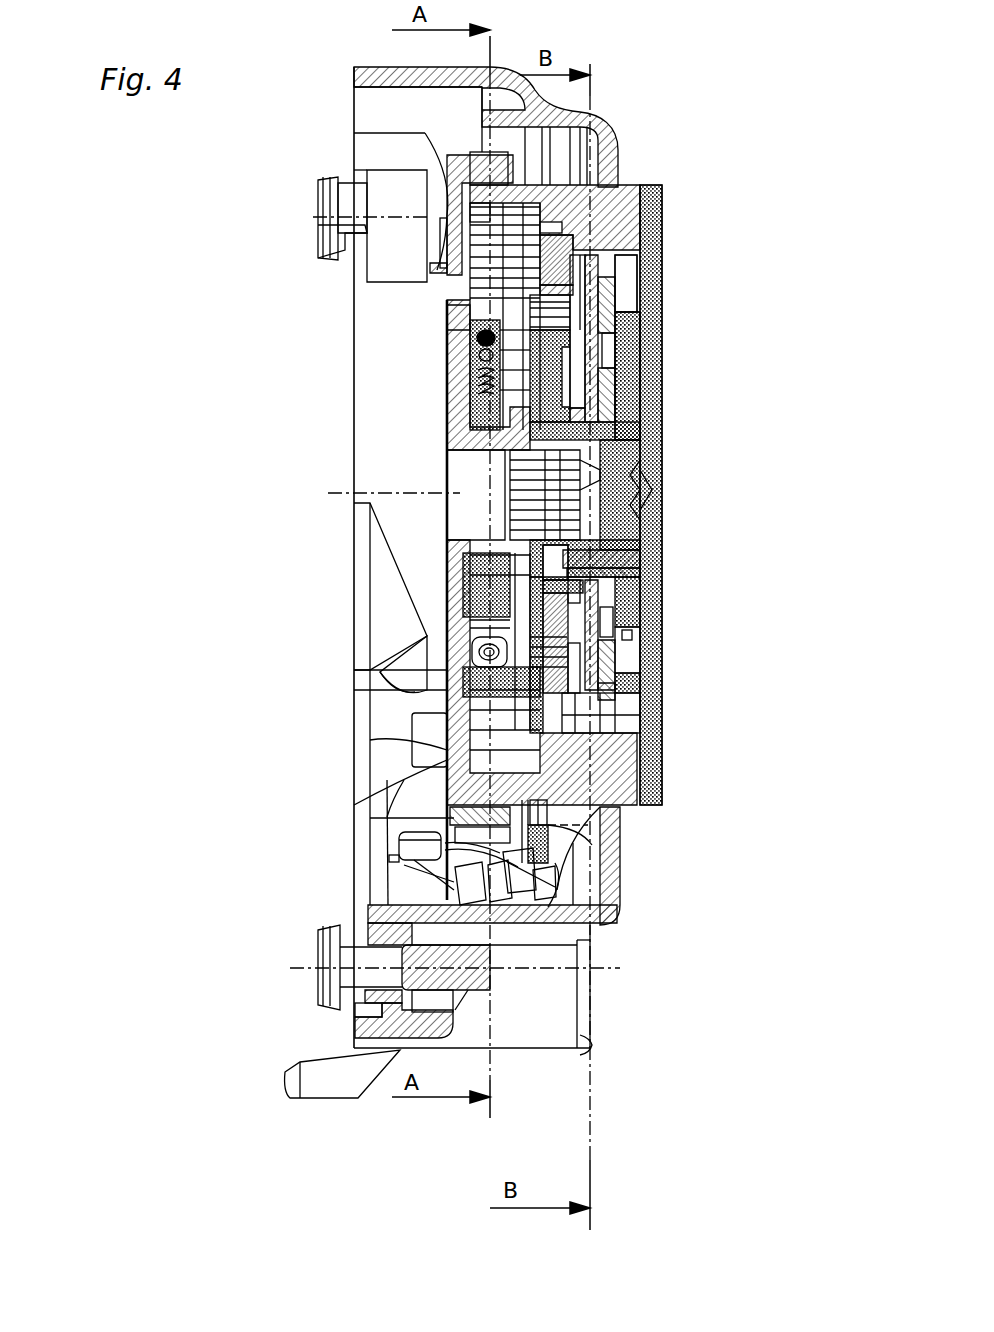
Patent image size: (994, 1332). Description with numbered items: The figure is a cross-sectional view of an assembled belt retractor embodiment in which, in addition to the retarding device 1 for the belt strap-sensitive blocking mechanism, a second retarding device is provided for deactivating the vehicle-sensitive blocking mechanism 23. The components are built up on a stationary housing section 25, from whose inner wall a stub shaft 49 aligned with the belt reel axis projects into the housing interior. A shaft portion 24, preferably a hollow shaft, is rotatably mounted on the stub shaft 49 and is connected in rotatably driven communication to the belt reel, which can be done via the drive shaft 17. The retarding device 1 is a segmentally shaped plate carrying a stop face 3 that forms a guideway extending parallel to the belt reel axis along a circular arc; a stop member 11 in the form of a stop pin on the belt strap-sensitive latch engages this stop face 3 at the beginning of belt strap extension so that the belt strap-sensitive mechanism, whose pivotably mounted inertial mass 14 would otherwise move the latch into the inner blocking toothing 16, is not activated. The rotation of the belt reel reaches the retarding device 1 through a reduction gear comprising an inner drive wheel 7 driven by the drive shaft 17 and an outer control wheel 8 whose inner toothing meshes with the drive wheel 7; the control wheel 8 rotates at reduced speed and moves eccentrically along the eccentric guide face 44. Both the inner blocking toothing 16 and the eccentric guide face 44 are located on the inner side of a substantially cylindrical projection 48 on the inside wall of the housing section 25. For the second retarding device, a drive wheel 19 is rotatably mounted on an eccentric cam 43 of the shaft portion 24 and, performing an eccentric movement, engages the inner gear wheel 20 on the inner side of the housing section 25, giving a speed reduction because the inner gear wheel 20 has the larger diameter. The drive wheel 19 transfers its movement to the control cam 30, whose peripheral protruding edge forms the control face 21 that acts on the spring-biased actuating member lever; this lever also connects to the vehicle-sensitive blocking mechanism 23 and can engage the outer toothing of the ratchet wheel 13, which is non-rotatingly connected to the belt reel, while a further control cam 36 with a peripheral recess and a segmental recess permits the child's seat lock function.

The retarding device 1 is at (480, 593).
The stop face 3 is at (467, 725).
The drive wheel 7 is at (553, 637).
The control wheel 8 is at (540, 273).
The stop member 11 is at (480, 700).
The ratchet wheel 13 is at (454, 813).
The inertial mass 14 is at (447, 427).
The inner blocking toothing 16 is at (572, 812).
The drive shaft 17 is at (527, 500).
The drive wheel 19 is at (632, 350).
The inner gear wheel 20 is at (636, 637).
The control face 21 is at (623, 245).
The vehicle-sensitive blocking mechanism 23 is at (455, 885).
The shaft portion 24 is at (625, 553).
The housing section 25 is at (615, 906).
The control cam 30 is at (627, 650).
The control cam 36 is at (613, 308).
The eccentric cam 43 is at (655, 392).
The eccentric guide face 44 is at (562, 727).
The cylindrical projection 48 is at (577, 205).
The stub shaft 49 is at (627, 450).